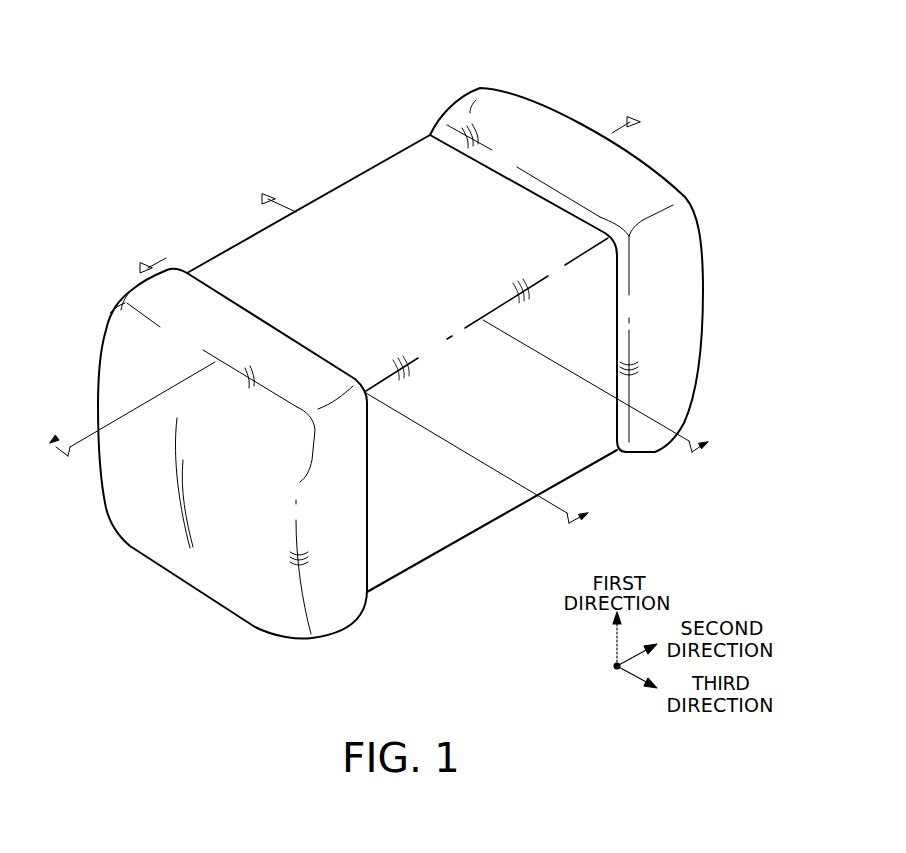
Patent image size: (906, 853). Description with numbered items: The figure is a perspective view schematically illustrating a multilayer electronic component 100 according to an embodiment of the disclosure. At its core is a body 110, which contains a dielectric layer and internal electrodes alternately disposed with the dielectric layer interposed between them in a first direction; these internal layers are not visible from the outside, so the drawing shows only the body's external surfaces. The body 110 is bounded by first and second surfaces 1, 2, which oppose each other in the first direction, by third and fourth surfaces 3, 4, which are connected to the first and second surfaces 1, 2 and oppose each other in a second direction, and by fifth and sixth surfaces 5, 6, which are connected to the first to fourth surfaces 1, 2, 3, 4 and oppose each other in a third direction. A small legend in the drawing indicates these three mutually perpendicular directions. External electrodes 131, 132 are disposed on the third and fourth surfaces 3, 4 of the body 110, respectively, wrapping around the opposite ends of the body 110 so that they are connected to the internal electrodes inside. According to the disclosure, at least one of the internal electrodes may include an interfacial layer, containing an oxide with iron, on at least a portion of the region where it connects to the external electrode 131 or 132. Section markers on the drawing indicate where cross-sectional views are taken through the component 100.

The multilayer electronic component 100 is at (243, 31).
The body 110 is at (342, 200).
The first surface 1 is at (385, 178).
The second surface 2 is at (458, 545).
The third surface 3 is at (156, 539).
The fourth surface 4 is at (566, 129).
The fifth surface 5 is at (222, 243).
The sixth surface 6 is at (579, 446).
The external electrode 131 is at (127, 288).
The external electrode 132 is at (471, 100).